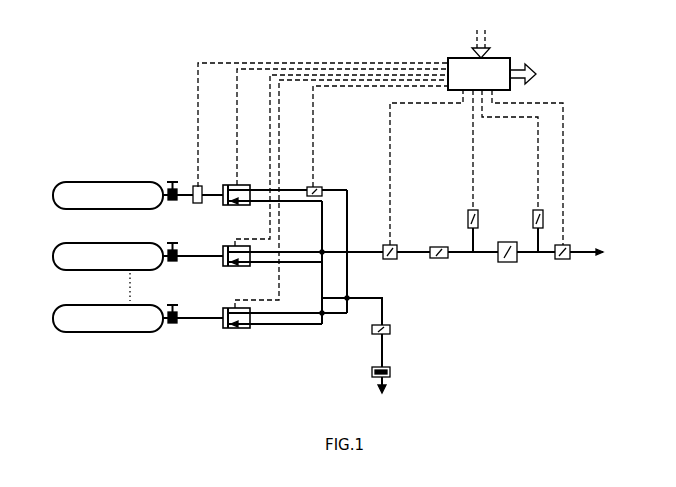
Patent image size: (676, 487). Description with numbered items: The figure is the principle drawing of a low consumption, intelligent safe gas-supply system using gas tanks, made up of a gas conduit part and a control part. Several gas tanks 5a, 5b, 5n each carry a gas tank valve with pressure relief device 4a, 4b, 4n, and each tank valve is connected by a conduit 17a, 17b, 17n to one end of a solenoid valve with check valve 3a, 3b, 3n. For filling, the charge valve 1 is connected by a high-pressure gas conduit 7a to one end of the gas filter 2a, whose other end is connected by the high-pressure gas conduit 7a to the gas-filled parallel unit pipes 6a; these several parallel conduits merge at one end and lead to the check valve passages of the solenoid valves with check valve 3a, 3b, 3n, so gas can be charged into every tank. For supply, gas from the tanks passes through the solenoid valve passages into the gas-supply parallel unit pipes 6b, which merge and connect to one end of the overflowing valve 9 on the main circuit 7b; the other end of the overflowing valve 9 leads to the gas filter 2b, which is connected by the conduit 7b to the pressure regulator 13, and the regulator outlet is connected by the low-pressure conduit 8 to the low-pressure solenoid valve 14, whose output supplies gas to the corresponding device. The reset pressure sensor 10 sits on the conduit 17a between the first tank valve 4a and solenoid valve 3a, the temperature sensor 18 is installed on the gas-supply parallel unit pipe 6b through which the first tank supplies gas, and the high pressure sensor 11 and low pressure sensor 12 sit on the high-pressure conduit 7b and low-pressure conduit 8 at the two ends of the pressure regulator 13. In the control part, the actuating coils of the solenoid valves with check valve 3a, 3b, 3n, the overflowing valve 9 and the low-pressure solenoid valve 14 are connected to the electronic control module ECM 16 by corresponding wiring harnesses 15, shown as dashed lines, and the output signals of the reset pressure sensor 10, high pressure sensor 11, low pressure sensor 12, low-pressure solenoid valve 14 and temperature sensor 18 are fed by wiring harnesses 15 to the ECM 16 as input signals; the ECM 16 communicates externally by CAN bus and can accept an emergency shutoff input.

The charge valve 1 is at (386, 365).
The gas filter 2a is at (381, 327).
The gas filter 2b is at (438, 260).
The solenoid valve with check valve 3a is at (230, 187).
The solenoid valve with check valve 3b is at (230, 248).
The solenoid valve with check valve 3n is at (230, 310).
The gas tank valve with pressure relief device 4a is at (172, 183).
The gas tank valve with pressure relief device 4b is at (172, 244).
The gas tank valve with pressure relief device 4n is at (172, 306).
The gas tank 5a is at (133, 192).
The gas tank 5b is at (133, 253).
The gas tank 5n is at (133, 315).
The gas-filled parallel unit pipe 6a is at (282, 327).
The gas-supply parallel unit pipe 6b is at (347, 230).
The high-pressure gas conduit 7a is at (355, 299).
The main circuit / high-pressure conduit 7b is at (405, 260).
The low-pressure conduit 8 is at (545, 260).
The overflowing valve 9 is at (391, 247).
The reset pressure sensor 10 is at (197, 189).
The high pressure sensor 11 is at (473, 215).
The low pressure sensor 12 is at (538, 215).
The pressure regulator 13 is at (507, 262).
The low-pressure solenoid valve 14 is at (563, 250).
The wiring harness 15 is at (325, 70).
The electronic control module ECM 16 is at (468, 68).
The conduit 17a is at (215, 197).
The conduit 17b is at (215, 259).
The conduit 17n is at (215, 321).
The temperature sensor 18 is at (316, 187).